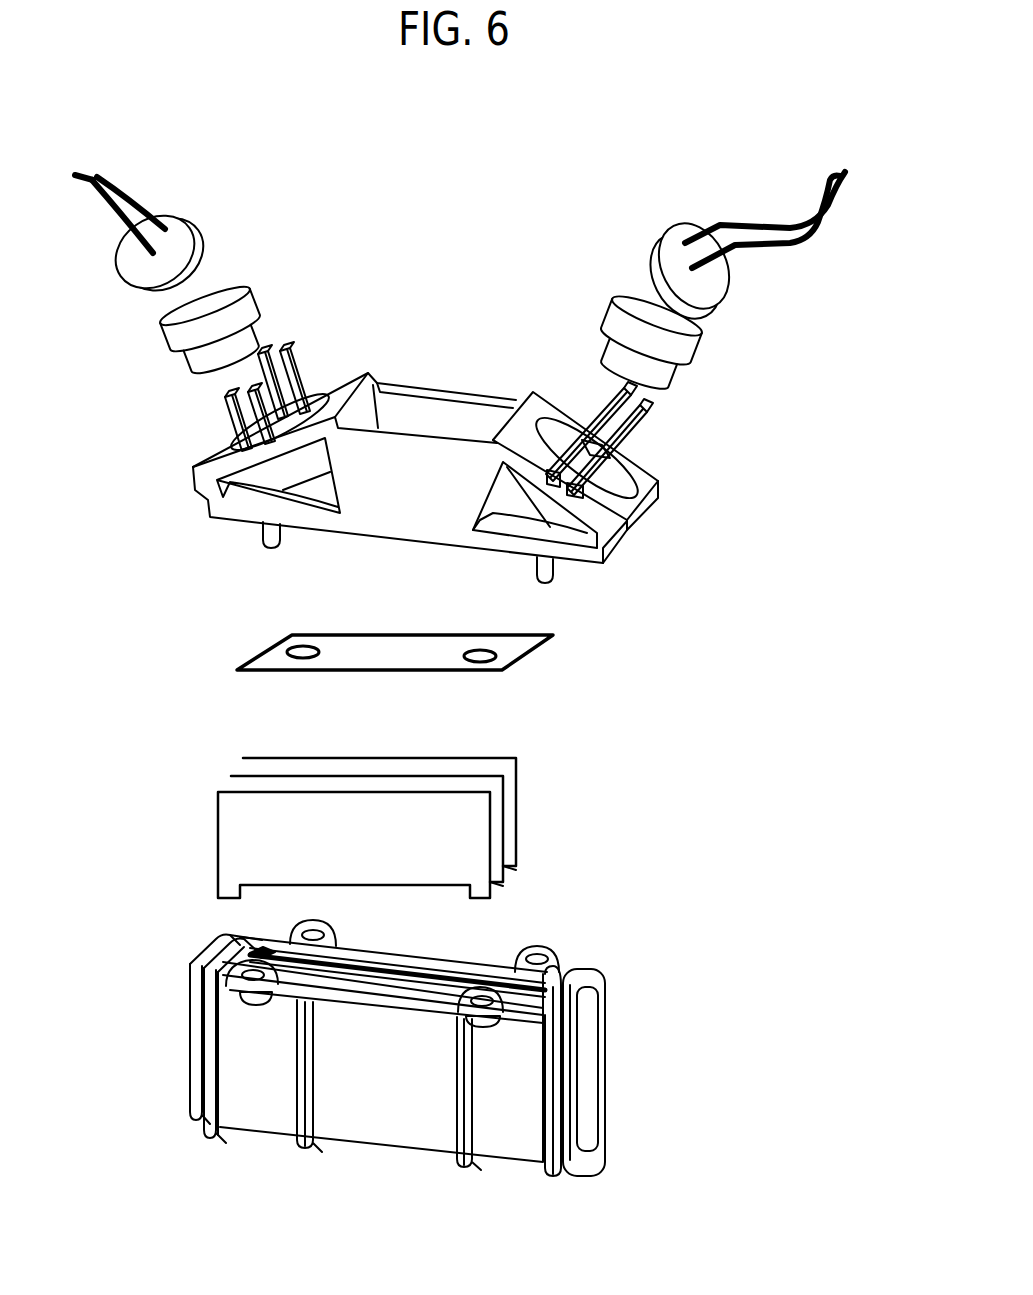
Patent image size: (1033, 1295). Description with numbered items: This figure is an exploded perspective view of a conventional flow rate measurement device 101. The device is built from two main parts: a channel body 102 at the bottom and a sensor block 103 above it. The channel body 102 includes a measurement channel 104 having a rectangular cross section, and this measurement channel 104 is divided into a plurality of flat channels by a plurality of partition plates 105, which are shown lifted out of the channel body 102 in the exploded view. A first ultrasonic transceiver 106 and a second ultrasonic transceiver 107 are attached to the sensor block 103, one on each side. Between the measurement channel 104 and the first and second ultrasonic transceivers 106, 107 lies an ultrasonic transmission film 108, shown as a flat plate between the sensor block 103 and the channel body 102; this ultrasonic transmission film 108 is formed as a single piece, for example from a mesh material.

The flow rate measurement device 101 is at (530, 157).
The channel body 102 is at (678, 767).
The sensor block 103 is at (360, 553).
The measurement channel 104 is at (575, 1082).
The partition plates 105 is at (517, 847).
The first ultrasonic transceiver 106 is at (195, 230).
The second ultrasonic transceiver 107 is at (733, 278).
The ultrasonic transmission film 108 is at (240, 657).